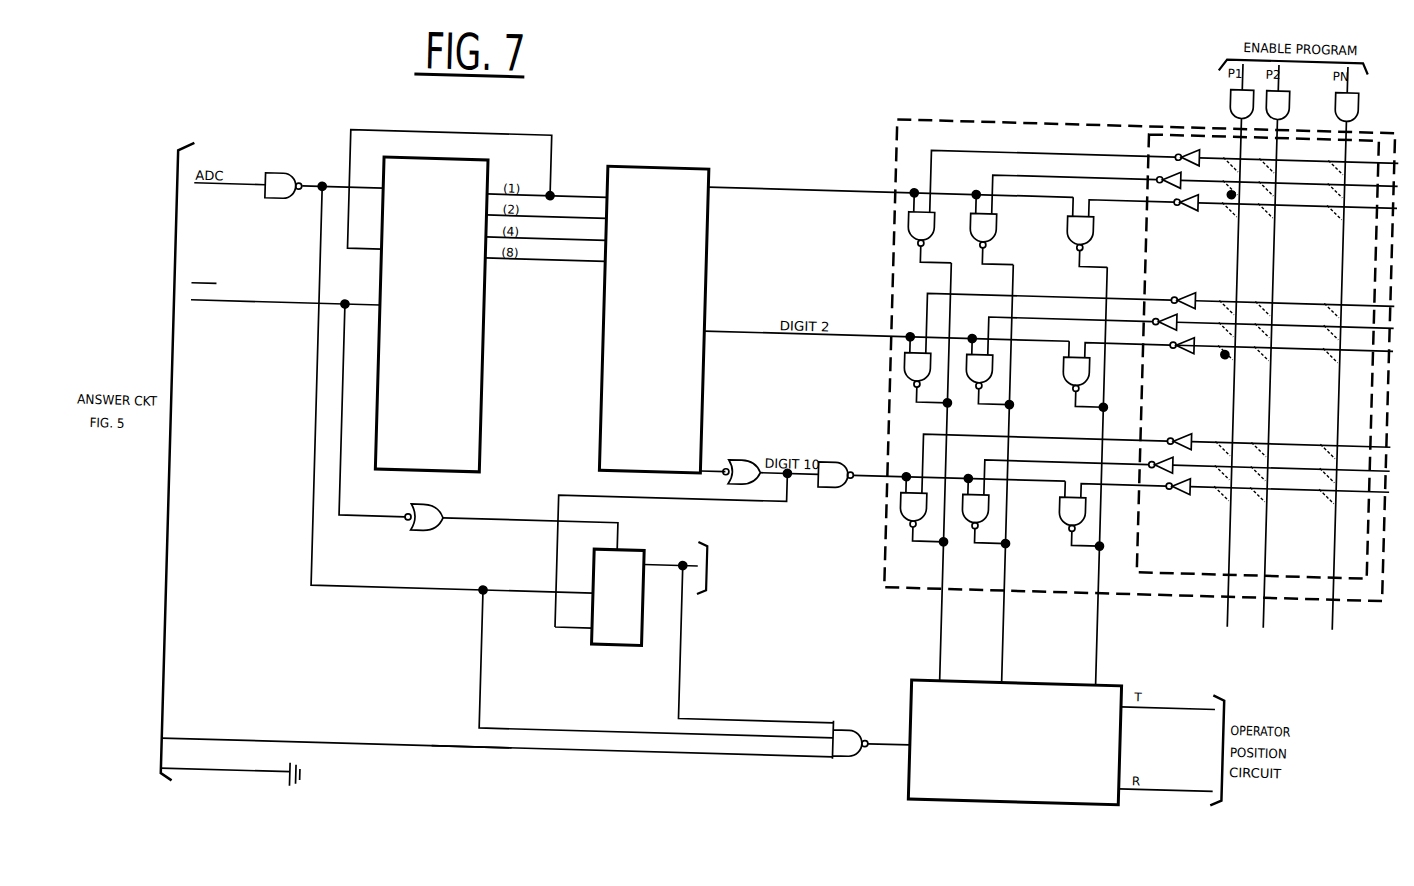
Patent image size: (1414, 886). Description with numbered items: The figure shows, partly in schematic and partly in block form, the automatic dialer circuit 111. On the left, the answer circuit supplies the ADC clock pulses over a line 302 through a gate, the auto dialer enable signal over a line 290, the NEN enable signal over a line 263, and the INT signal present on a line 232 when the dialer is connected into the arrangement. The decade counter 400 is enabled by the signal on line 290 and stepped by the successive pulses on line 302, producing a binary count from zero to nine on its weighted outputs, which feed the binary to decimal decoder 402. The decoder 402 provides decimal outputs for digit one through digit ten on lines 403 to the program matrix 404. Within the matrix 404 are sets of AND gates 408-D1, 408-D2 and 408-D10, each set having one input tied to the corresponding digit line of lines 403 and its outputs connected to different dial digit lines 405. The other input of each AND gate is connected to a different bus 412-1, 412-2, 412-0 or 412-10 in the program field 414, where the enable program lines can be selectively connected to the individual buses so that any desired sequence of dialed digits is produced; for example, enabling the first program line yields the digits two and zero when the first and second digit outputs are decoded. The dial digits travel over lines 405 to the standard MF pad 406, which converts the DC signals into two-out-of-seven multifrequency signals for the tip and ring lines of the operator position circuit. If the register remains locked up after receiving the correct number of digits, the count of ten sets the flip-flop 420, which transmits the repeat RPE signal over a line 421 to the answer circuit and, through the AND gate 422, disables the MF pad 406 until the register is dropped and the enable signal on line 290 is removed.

The line 302 is at (233, 196).
The line 290 is at (273, 315).
The decade counter 400 is at (485, 384).
The binary to decimal decoder 402 is at (597, 358).
The lines 403 is at (745, 175).
The program matrix 404 is at (935, 111).
The program field 414 is at (1161, 122).
The bus 412-1 is at (1041, 143).
The bus 412-2 is at (1012, 166).
The bus 412-0 is at (1118, 189).
The bus 412-10 is at (1016, 471).
The set of AND gates 408-D1 is at (899, 224).
The set of AND gates 408-D2 is at (901, 369).
The set of AND gates 408-D10 is at (905, 519).
The flip-flop 420 is at (613, 648).
The line 421 is at (700, 560).
The AND gate 422 is at (853, 726).
The lines 405 is at (1106, 651).
The MF pad 406 is at (1057, 793).
The line 263 is at (241, 751).
The line 232 is at (236, 781).
The automatic dialer circuit 111 is at (499, 768).